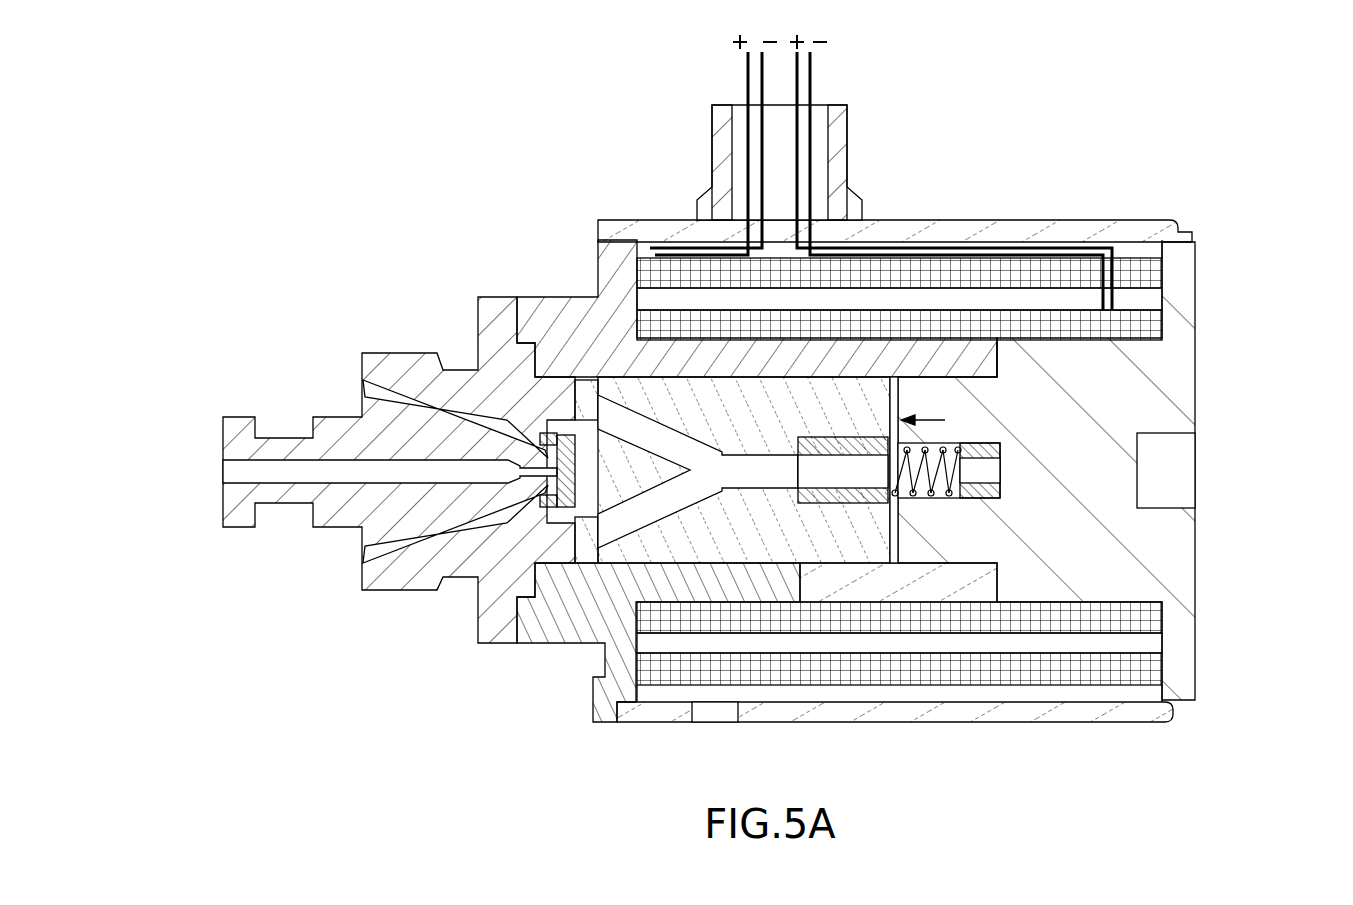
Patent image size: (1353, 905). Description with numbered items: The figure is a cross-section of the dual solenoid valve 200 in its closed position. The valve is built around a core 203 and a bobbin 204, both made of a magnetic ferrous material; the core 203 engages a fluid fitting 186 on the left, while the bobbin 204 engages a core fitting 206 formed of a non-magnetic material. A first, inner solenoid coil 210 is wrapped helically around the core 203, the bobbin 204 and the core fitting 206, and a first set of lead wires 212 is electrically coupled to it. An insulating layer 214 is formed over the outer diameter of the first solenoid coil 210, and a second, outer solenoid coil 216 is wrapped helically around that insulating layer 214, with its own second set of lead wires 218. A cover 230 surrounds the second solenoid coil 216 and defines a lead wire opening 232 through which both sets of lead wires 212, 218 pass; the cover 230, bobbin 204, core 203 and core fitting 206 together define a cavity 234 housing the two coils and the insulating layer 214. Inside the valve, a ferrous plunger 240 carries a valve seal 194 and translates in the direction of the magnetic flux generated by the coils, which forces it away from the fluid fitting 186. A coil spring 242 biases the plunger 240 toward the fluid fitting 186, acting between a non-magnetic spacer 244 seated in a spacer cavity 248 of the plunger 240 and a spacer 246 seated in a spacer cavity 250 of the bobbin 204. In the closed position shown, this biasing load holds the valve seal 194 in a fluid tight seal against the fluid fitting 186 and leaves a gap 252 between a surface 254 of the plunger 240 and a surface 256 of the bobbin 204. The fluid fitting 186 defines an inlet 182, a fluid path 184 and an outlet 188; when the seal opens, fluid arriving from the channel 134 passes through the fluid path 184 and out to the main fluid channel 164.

The dual solenoid valve 200 is at (496, 115).
The channel 134 is at (352, 381).
The main fluid channel 164 is at (237, 473).
The inlet 182 is at (368, 378).
The fluid path 184 is at (288, 452).
The fluid fitting 186 is at (408, 375).
The outlet 188 is at (228, 468).
The valve seal 194 is at (575, 473).
The core 203 is at (576, 322).
The bobbin 204 is at (1062, 478).
The core fitting 206 is at (983, 360).
The first solenoid coil 210 is at (1150, 330).
The first set of lead wires 212 is at (798, 76).
The insulating layer 214 is at (1145, 297).
The second solenoid coil 216 is at (1130, 268).
The second set of lead wires 218 is at (762, 85).
The cover 230 is at (1098, 232).
The lead wire opening 232 is at (838, 213).
The cavity 234 is at (1050, 725).
The plunger 240 is at (722, 425).
The coil spring 242 is at (947, 450).
The spacer 244 is at (817, 498).
The spacer 246 is at (995, 498).
The spacer cavity 248 is at (860, 514).
The spacer cavity 250 is at (940, 495).
The gap 252 is at (882, 420).
The surface 254 is at (892, 525).
The surface 256 is at (890, 392).